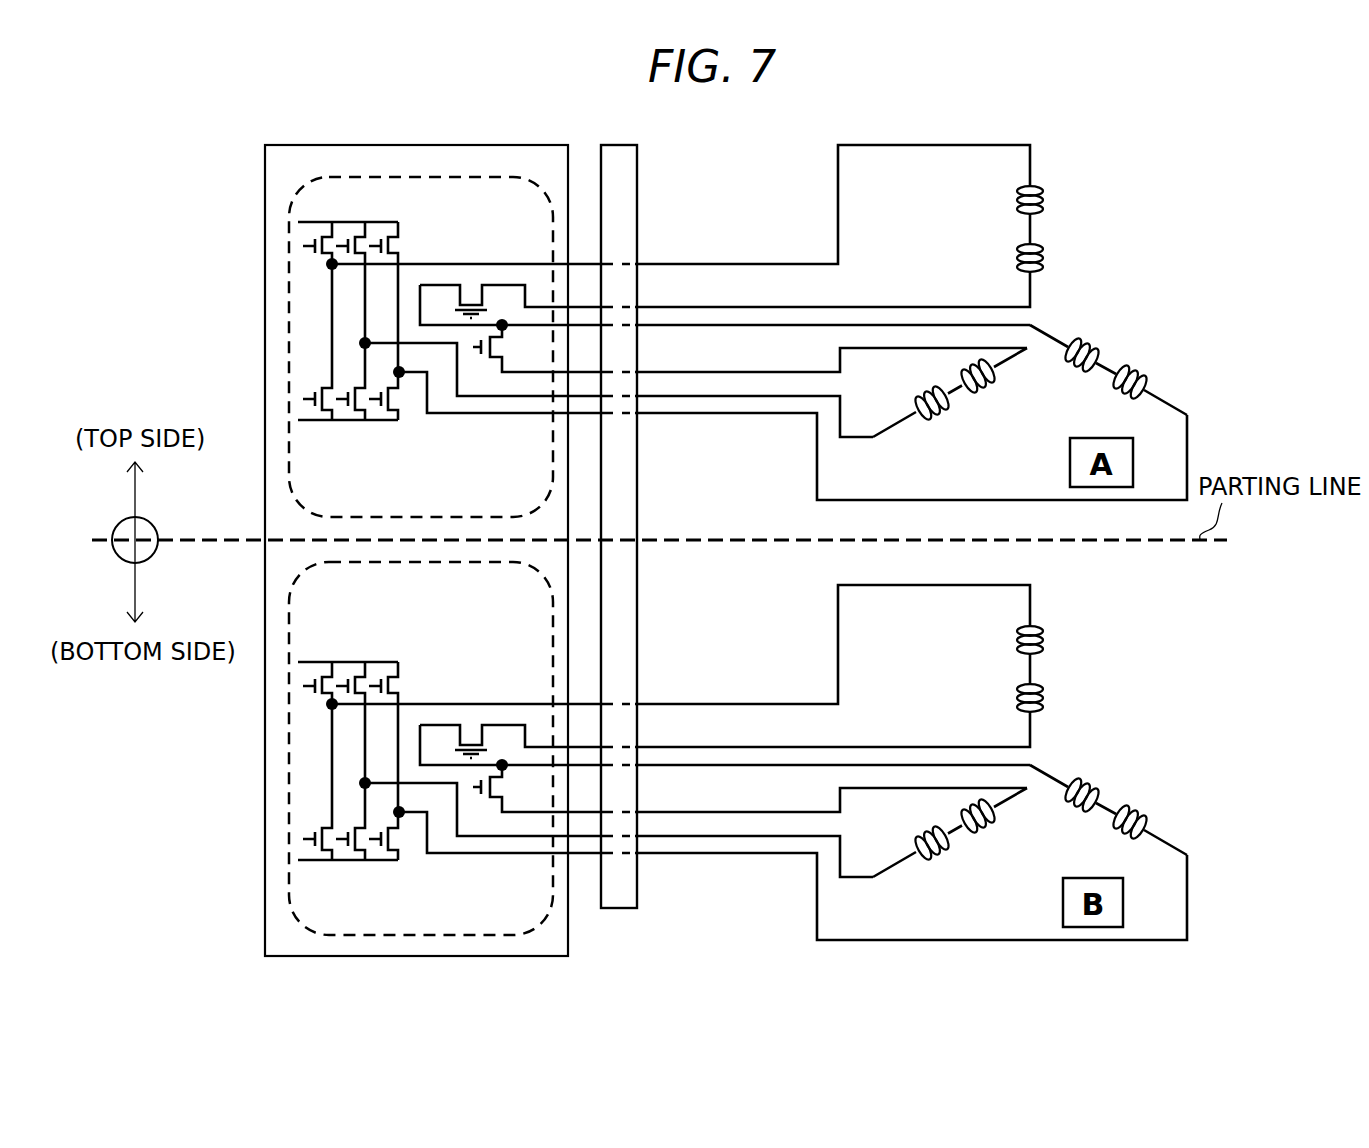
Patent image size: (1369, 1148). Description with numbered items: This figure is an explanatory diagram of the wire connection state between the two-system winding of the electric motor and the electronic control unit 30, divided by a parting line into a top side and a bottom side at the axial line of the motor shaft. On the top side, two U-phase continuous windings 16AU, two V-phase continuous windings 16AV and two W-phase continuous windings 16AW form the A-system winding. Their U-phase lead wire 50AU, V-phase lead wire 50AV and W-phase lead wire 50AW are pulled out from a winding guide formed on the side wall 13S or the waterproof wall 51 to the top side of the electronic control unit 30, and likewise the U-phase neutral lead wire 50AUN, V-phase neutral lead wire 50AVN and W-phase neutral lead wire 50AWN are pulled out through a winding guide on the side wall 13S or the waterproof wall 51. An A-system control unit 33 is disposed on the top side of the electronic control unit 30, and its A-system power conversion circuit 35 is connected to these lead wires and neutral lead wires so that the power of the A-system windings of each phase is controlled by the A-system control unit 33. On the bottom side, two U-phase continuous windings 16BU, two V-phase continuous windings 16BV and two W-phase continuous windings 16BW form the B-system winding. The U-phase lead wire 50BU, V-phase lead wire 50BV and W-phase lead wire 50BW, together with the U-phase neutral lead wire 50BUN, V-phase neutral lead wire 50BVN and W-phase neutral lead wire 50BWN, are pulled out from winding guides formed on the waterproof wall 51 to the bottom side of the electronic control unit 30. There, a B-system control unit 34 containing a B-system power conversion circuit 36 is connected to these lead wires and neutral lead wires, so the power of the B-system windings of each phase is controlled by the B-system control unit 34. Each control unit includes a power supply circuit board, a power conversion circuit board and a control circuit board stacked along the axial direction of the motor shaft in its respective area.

The electronic control unit 30 is at (265, 300).
The A-system control unit 33 is at (289, 228).
The B-system control unit 34 is at (289, 730).
The A-system power conversion circuit 35 is at (378, 226).
The B-system power conversion circuit 36 is at (348, 798).
The waterproof wall 51 is at (594, 501).
The side wall 13S is at (618, 156).
The U-phase lead wire 50AU is at (770, 262).
The U-phase neutral lead wire 50AUN is at (678, 306).
The W-phase neutral lead wire 50AWN is at (896, 324).
The V-phase neutral lead wire 50AVN is at (726, 374).
The W-phase lead wire 50AW is at (670, 398).
The V-phase lead wire 50AV is at (790, 415).
The U-phase continuous winding 16AU is at (1032, 231).
The W-phase continuous winding 16AW is at (1107, 363).
The V-phase continuous winding 16AV is at (960, 392).
The U-phase lead wire 50BU is at (790, 703).
The U-phase neutral lead wire 50BUN is at (690, 746).
The W-phase neutral lead wire 50BWN is at (893, 764).
The V-phase neutral lead wire 50BVN is at (726, 815).
The W-phase lead wire 50BW is at (660, 855).
The V-phase lead wire 50BV is at (787, 855).
The U-phase continuous winding 16BU is at (1032, 671).
The W-phase continuous winding 16BW is at (1107, 803).
The V-phase continuous winding 16BV is at (960, 832).